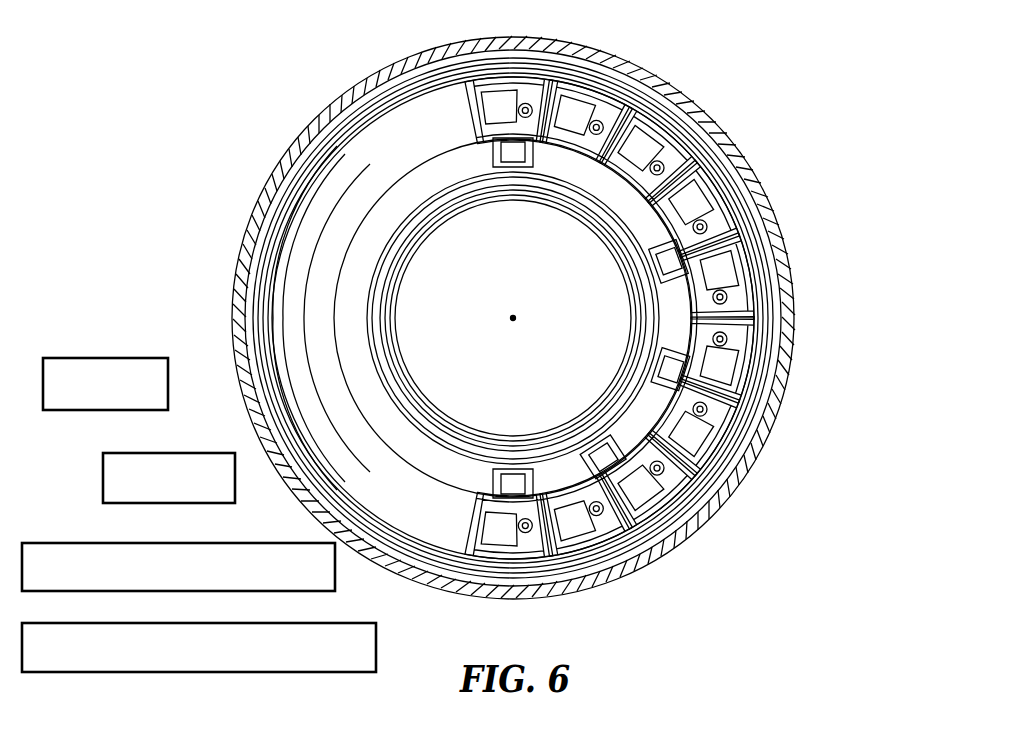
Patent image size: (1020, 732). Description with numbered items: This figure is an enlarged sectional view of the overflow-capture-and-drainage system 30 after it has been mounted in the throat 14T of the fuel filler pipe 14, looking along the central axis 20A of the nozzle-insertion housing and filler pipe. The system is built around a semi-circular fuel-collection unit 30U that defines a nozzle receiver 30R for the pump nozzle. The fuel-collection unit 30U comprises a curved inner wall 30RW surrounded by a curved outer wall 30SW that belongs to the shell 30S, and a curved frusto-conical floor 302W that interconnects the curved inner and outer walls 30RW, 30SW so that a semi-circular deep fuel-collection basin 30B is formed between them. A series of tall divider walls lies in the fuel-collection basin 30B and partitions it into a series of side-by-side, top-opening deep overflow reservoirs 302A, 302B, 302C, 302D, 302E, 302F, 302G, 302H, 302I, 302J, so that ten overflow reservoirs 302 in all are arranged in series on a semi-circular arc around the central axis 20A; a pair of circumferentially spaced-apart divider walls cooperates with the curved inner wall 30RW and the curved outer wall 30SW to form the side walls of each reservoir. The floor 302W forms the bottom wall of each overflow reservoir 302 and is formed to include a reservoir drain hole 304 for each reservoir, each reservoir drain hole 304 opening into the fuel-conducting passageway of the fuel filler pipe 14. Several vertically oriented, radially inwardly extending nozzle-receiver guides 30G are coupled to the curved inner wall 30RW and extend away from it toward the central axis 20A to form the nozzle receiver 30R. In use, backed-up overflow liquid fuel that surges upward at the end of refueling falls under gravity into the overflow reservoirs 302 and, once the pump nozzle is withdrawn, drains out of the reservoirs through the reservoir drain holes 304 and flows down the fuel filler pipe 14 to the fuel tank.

The fuel filler pipe 14 is at (332, 96).
The throat 14T is at (222, 369).
The central axis 20A is at (513, 323).
The overflow-capture-and-drainage system 30 is at (779, 724).
The shell 30S is at (276, 446).
The curved outer wall 30SW is at (806, 284).
The nozzle receiver 30R is at (505, 432).
The curved inner wall 30RW is at (668, 400).
The fuel-collection basin 30B is at (692, 158).
The fuel-collection unit 30U is at (455, 518).
The nozzle-receiver guide 30G is at (642, 140).
The overflow reservoir 302 is at (497, 566).
The overflow reservoir 302A is at (524, 68).
The overflow reservoir 302B is at (593, 100).
The overflow reservoir 302C is at (655, 122).
The overflow reservoir 302D is at (740, 175).
The overflow reservoir 302E is at (760, 250).
The overflow reservoir 302F is at (757, 357).
The overflow reservoir 302G is at (717, 428).
The overflow reservoir 302H is at (688, 500).
The overflow reservoir 302I is at (625, 545).
The overflow reservoir 302J is at (528, 560).
The curved frusto-conical floor 302W is at (478, 88).
The reservoir drain hole 304 is at (598, 135).